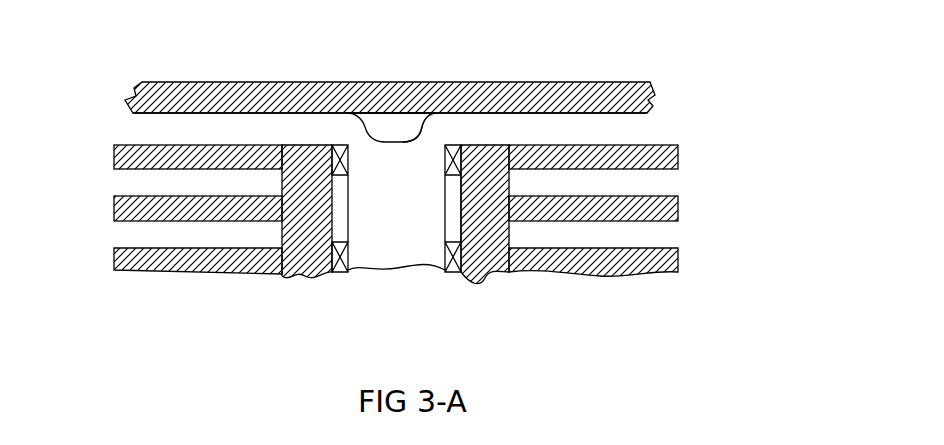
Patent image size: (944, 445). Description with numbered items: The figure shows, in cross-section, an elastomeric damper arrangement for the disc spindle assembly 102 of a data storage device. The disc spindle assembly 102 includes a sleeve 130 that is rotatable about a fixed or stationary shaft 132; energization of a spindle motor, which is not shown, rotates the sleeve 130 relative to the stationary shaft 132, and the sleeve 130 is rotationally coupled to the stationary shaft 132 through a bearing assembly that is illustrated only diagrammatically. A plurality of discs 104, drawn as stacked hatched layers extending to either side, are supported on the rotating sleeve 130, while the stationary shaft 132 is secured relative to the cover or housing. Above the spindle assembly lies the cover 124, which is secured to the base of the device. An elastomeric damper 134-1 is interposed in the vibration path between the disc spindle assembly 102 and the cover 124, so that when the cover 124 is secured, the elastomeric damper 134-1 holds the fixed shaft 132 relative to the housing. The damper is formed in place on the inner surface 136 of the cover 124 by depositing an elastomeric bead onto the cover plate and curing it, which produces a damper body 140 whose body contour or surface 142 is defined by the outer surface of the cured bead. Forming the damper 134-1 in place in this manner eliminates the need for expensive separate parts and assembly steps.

The disc spindle assembly 102 is at (514, 257).
The discs 104 is at (682, 258).
The cover 124 is at (620, 82).
The sleeve 130 is at (478, 243).
The stationary shaft 132 is at (415, 222).
The elastomeric damper 134-1 is at (383, 126).
The inner surface 136 is at (158, 114).
The damper body 140 is at (388, 128).
The body contour or surface 142 is at (438, 130).